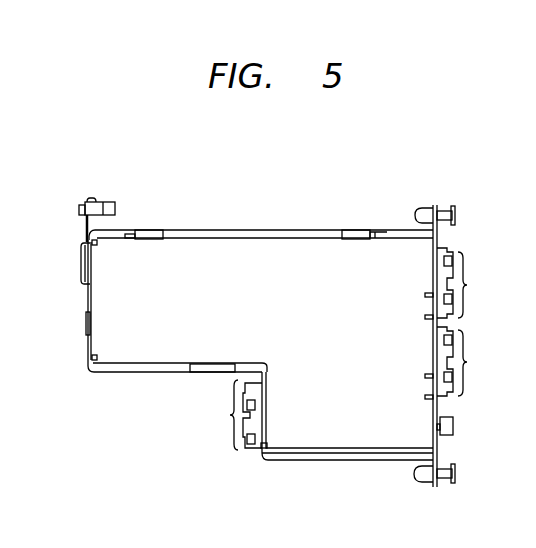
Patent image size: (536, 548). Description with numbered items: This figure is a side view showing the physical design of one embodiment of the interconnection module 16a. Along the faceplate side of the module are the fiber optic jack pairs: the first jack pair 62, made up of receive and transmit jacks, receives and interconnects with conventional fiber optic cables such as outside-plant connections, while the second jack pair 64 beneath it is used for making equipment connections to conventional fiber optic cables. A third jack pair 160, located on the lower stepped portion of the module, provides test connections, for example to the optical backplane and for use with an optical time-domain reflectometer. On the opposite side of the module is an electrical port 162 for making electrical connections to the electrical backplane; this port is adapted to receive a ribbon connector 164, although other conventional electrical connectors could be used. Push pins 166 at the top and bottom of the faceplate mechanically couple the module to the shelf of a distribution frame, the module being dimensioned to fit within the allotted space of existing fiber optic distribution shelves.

The interconnection module 16a is at (268, 208).
The ribbon connector 164 is at (108, 197).
The electrical port 162 is at (80, 272).
The third jack pair 160 is at (229, 415).
The first jack pair 62 is at (468, 285).
The second jack pair 64 is at (468, 362).
The push pins 166 is at (425, 201).